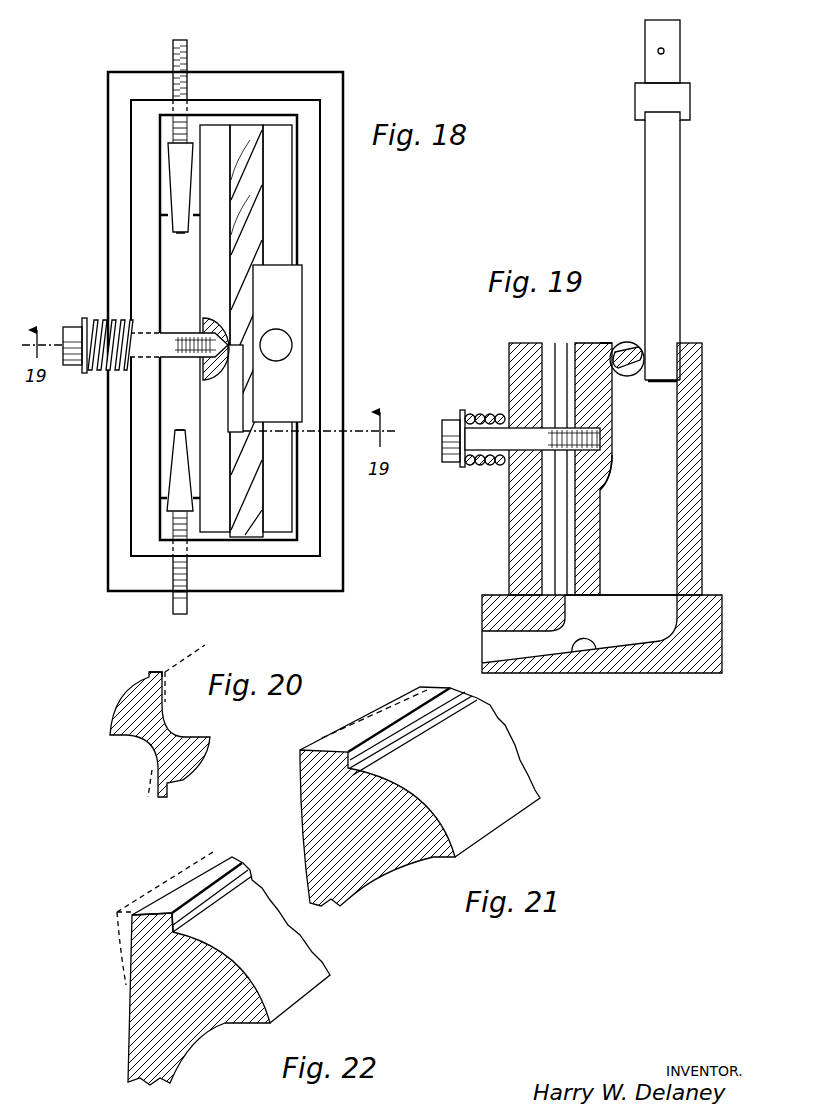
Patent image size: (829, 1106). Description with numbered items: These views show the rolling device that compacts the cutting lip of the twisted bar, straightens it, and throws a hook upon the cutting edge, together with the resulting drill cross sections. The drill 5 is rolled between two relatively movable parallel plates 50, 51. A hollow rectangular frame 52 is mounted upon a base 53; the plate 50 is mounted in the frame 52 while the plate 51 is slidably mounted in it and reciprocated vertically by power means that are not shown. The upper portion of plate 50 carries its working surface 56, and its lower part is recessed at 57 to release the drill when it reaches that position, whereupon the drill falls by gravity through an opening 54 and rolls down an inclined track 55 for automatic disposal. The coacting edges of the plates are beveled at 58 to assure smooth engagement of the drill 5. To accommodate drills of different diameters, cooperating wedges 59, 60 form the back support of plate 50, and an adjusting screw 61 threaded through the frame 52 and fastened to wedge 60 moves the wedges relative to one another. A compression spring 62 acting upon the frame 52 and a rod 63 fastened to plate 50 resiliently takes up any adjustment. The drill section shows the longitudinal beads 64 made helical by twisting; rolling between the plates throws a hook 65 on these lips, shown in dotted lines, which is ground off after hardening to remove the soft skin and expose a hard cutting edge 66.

In FIG. 18, the drill 5 is at (258, 240).
In FIG. 19, the drill 5 is at (627, 342).
In FIG. 20, the drill 5 is at (166, 733).
In FIG. 18, the plate 50 is at (207, 118).
In FIG. 19, the plate 50 is at (586, 343).
In FIG. 18, the plate 51 is at (279, 120).
In FIG. 19, the plate 51 is at (672, 167).
In FIG. 19, the hollow rectangular frame 52 is at (692, 512).
In FIG. 19, the base 53 is at (715, 630).
In FIG. 19, the opening 54 is at (672, 597).
In FIG. 19, the inclined track 55 is at (608, 662).
In FIG. 19, the working surface 56 is at (608, 412).
In FIG. 19, the recess 57 is at (602, 482).
In FIG. 19, the bevel 58 is at (605, 343).
In FIG. 18, the wedge 59 is at (165, 186).
In FIG. 18, the wedge 60 is at (181, 235).
In FIG. 18, the adjusting screw 61 is at (185, 58).
In FIG. 18, the compression spring 62 is at (112, 368).
In FIG. 19, the compression spring 62 is at (484, 466).
In FIG. 18, the rod 63 is at (110, 330).
In FIG. 19, the rod 63 is at (488, 437).
In FIG. 20, the longitudinal bead 64 is at (148, 672).
In FIG. 20, the hook 65 is at (183, 712).
In FIG. 21, the hook 65 is at (300, 760).
In FIG. 22, the hook 65 is at (118, 912).
In FIG. 22, the hard cutting edge 66 is at (125, 920).